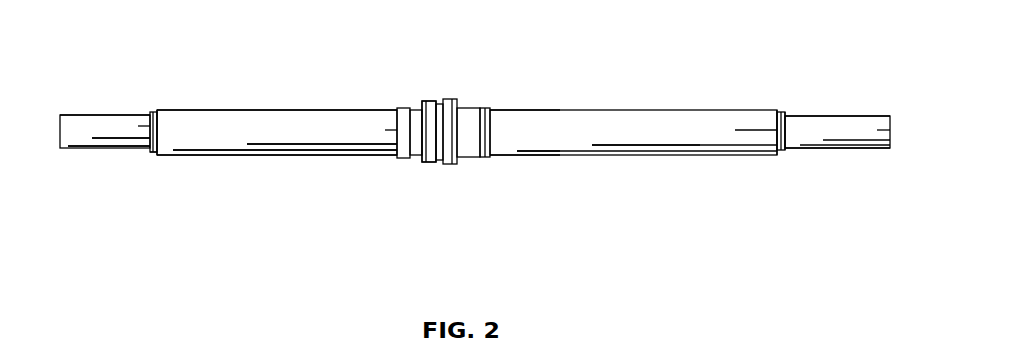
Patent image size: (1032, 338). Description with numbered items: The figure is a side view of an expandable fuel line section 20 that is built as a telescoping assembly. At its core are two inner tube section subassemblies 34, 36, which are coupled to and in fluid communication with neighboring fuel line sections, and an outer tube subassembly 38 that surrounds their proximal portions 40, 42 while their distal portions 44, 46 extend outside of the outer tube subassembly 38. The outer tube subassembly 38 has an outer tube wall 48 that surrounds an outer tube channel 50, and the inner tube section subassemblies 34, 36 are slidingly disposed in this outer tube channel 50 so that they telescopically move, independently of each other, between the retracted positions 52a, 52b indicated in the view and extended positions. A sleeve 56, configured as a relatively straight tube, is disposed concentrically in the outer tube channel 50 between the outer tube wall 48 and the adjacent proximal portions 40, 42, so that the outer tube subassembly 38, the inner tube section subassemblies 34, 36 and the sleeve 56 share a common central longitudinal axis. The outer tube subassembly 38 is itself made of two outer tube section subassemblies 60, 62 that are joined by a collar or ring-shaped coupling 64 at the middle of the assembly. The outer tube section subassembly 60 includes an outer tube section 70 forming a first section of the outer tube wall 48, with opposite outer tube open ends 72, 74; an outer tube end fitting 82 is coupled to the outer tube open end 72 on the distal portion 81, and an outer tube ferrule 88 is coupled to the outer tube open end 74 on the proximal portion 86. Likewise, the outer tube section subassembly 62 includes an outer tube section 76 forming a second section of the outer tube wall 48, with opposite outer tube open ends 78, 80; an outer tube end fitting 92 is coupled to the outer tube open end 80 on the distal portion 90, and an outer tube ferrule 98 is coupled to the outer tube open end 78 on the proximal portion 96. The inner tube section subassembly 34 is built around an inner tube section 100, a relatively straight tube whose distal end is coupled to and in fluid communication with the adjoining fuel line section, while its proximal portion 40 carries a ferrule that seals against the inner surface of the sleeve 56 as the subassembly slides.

The expandable fuel line section 20 is at (590, 72).
The inner tube section subassembly 34 is at (90, 120).
The inner tube section subassembly 36 is at (874, 118).
The outer tube subassembly 38 is at (392, 108).
The proximal portion 40 is at (355, 150).
The proximal portion 42 is at (537, 140).
The distal portion 44 is at (110, 140).
The distal portion 46 is at (840, 149).
The outer tube wall 48 is at (233, 120).
The outer tube channel 50 is at (297, 150).
The retracted position 52a is at (124, 100).
The retracted position 52b is at (834, 98).
The sleeve 56 is at (509, 118).
The outer tube section subassembly 60 is at (230, 152).
The outer tube section subassembly 62 is at (695, 151).
The coupling 64 is at (447, 100).
The outer tube section 70 is at (197, 152).
The outer tube open end 72 is at (153, 153).
The outer tube open end 74 is at (405, 108).
The outer tube section 76 is at (585, 152).
The outer tube open end 78 is at (490, 157).
The outer tube open end 80 is at (777, 112).
The distal portion 81 is at (163, 112).
The outer tube end fitting 82 is at (153, 112).
The proximal portion 86 is at (400, 108).
The outer tube ferrule 88 is at (432, 103).
The distal portion 90 is at (776, 109).
The outer tube end fitting 92 is at (782, 112).
The proximal portion 96 is at (511, 157).
The outer tube ferrule 98 is at (473, 155).
The inner tube section 100 is at (77, 120).